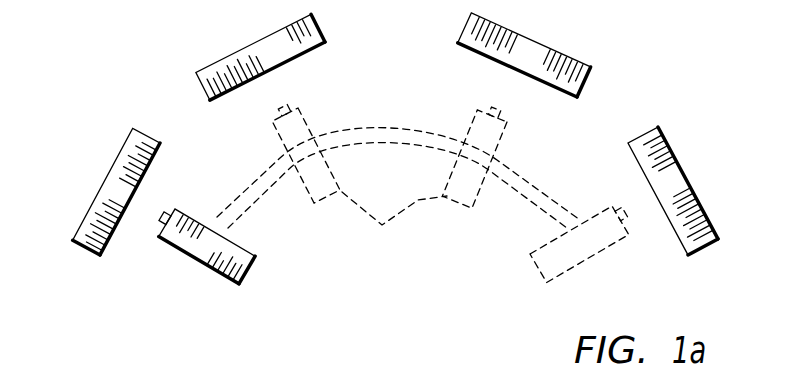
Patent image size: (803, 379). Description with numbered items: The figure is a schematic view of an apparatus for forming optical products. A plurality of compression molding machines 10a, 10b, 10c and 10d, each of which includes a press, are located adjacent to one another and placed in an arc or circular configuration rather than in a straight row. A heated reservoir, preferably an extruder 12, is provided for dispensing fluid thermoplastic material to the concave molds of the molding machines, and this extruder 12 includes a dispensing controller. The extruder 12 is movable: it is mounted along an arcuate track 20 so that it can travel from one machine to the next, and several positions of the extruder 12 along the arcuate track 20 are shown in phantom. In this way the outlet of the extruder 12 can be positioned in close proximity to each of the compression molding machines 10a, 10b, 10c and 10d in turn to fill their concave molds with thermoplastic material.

The compression molding machine 10a is at (100, 192).
The compression molding machine 10b is at (253, 42).
The compression molding machine 10c is at (520, 32).
The compression molding machine 10d is at (682, 170).
The extruder 12 is at (222, 278).
The arcuate track 20 is at (272, 182).